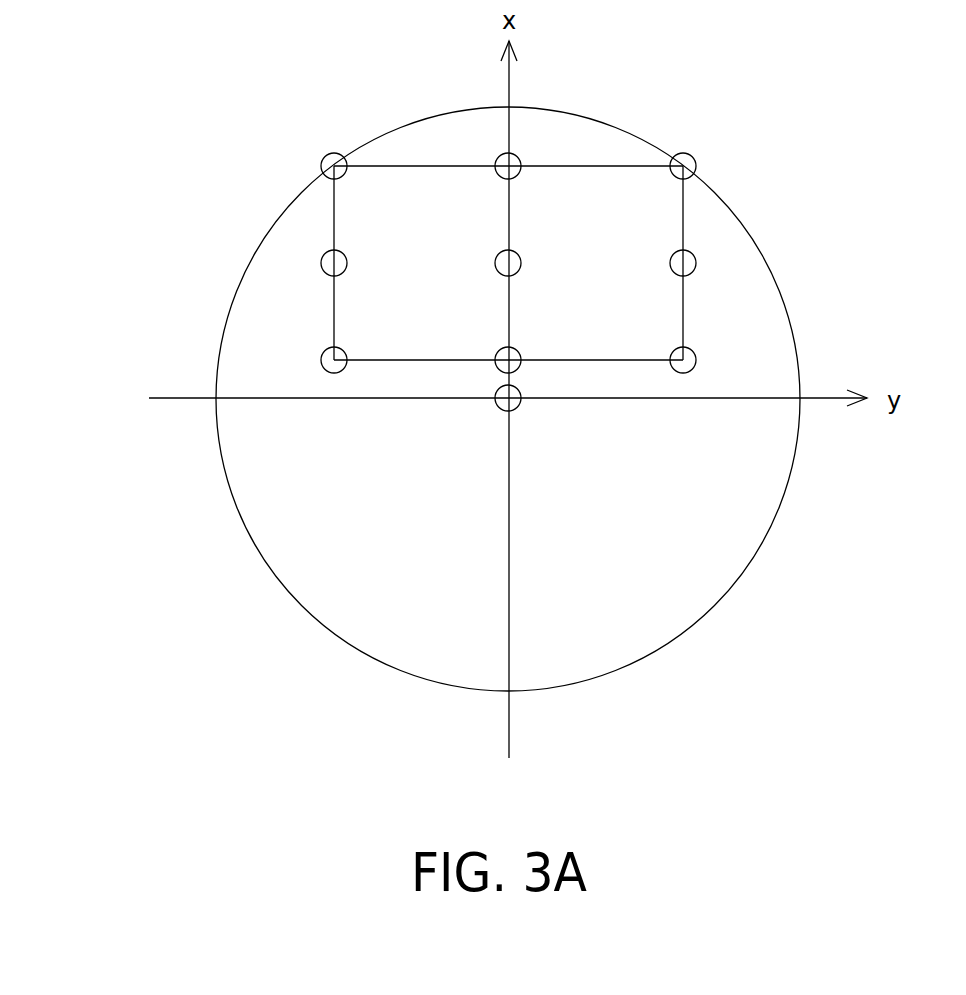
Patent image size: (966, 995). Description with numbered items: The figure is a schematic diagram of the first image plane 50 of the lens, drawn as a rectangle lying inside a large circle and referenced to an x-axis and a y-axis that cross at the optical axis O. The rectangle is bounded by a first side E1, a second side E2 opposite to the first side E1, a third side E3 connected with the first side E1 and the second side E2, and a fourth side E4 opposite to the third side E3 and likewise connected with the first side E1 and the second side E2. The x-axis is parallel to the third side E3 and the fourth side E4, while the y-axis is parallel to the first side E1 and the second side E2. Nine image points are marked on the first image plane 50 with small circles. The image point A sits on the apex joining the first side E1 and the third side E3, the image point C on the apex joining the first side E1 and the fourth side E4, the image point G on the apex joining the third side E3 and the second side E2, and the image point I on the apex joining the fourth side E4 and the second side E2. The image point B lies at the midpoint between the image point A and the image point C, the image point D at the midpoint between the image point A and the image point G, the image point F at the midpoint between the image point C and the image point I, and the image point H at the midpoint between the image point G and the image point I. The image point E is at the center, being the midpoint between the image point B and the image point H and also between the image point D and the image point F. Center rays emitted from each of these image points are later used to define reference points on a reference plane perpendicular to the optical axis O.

The first image plane 50 is at (650, 218).
The first side E1 is at (599, 149).
The second side E2 is at (613, 362).
The third side E3 is at (332, 305).
The fourth side E4 is at (682, 318).
The optical axis O is at (514, 408).
The image point A is at (322, 154).
The image point B is at (521, 154).
The image point C is at (697, 154).
The image point D is at (322, 265).
The image point E is at (519, 265).
The image point F is at (694, 265).
The image point G is at (321, 370).
The image point H is at (521, 370).
The image point I is at (690, 370).